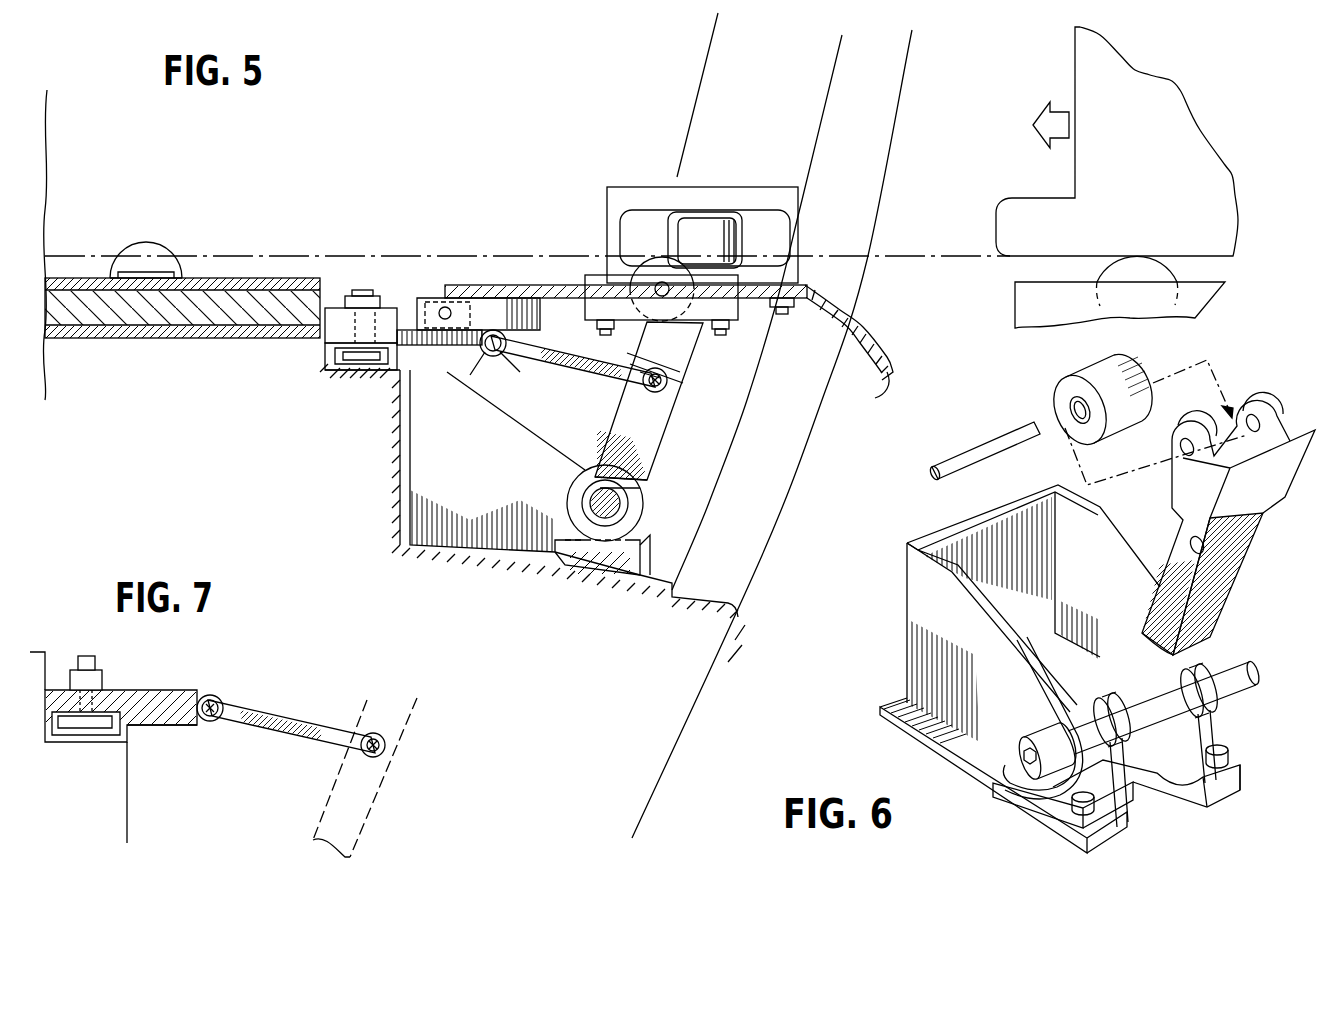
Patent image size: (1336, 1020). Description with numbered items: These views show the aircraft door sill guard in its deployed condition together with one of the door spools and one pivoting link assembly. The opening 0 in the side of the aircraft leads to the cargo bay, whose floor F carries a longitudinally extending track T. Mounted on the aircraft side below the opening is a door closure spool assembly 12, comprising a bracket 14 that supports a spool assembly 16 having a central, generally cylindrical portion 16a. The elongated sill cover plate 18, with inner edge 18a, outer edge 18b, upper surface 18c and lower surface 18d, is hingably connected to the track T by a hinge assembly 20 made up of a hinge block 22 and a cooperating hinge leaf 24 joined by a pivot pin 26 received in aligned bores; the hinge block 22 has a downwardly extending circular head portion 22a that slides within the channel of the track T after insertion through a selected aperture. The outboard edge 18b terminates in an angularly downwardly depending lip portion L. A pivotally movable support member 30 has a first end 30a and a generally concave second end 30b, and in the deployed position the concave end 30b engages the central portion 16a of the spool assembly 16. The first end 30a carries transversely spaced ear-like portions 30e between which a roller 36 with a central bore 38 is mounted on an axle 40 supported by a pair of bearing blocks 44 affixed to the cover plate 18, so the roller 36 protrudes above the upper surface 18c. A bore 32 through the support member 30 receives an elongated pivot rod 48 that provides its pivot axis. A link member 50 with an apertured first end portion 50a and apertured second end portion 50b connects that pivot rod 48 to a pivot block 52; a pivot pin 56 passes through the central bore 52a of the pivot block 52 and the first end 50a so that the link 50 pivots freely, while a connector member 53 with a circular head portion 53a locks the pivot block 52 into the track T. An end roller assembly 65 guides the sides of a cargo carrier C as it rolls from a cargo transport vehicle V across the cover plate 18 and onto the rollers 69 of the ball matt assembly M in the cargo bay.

In FIG. 5, the opening 0 is at (668, 572).
In FIG. 5, the door closure spool assembly 12 is at (658, 514).
In FIG. 6, the door closure spool assembly 12 is at (1270, 661).
In FIG. 5, the bracket 14 is at (473, 461).
In FIG. 6, the bracket 14 is at (895, 641).
In FIG. 5, the spool assembly 16 is at (562, 484).
In FIG. 6, the spool assembly 16 is at (1265, 722).
In FIG. 5, the central cylindrically shaped portion 16a is at (590, 503).
In FIG. 6, the central cylindrically shaped portion 16a is at (1130, 705).
In FIG. 5, the sill cover plate 18 is at (543, 271).
In FIG. 5, the inner edge 18a is at (455, 290).
In FIG. 5, the outer edge 18b is at (886, 385).
In FIG. 5, the upper surface 18c is at (512, 292).
In FIG. 5, the lower surface 18d is at (772, 300).
In FIG. 5, the hinge assembly 20 is at (395, 298).
In FIG. 5, the hinge block 22 is at (335, 308).
In FIG. 5, the head portion 22a is at (346, 352).
In FIG. 5, the hinge leaf 24 is at (428, 298).
In FIG. 5, the pivot pin 26 is at (451, 313).
In FIG. 5, the support member 30 is at (665, 423).
In FIG. 6, the support member 30 is at (1253, 592).
In FIG. 7, the support member 30 is at (365, 825).
In FIG. 6, the first end 30a is at (1183, 468).
In FIG. 5, the second end 30b is at (622, 470).
In FIG. 6, the second end 30b is at (1145, 638).
In FIG. 7, the second end 30b is at (315, 850).
In FIG. 5, the ear-like portions 30e is at (652, 278).
In FIG. 6, the ear-like portions 30e is at (1192, 438).
In FIG. 5, the bore 32 is at (637, 377).
In FIG. 6, the bore 32 is at (1190, 540).
In FIG. 5, the roller 36 is at (680, 270).
In FIG. 6, the roller 36 is at (1058, 388).
In FIG. 6, the central bore 38 is at (1075, 410).
In FIG. 5, the axle 40 is at (662, 298).
In FIG. 6, the axle 40 is at (950, 462).
In FIG. 5, the bearing blocks 44 is at (600, 290).
In FIG. 5, the pivot rod 48 is at (652, 392).
In FIG. 7, the pivot rod 48 is at (380, 753).
In FIG. 5, the link member 50 is at (565, 362).
In FIG. 7, the link member 50 is at (283, 744).
In FIG. 5, the first end portion 50a is at (482, 352).
In FIG. 7, the first end portion 50a is at (199, 700).
In FIG. 5, the second end portion 50b is at (668, 383).
In FIG. 7, the second end portion 50b is at (384, 742).
In FIG. 5, the pivot block 52 is at (410, 348).
In FIG. 7, the pivot block 52 is at (138, 688).
In FIG. 5, the central bore 52a is at (488, 358).
In FIG. 7, the central bore 52a is at (222, 710).
In FIG. 7, the connector member 53 is at (75, 700).
In FIG. 7, the head portion 53a is at (80, 725).
In FIG. 5, the pivot pin 56 is at (501, 355).
In FIG. 7, the pivot pin 56 is at (212, 722).
In FIG. 5, the end roller assembly 65 is at (718, 180).
In FIG. 5, the rollers 69 is at (142, 262).
In FIG. 5, the cargo carrier C is at (1232, 170).
In FIG. 5, the floor F is at (332, 350).
In FIG. 7, the floor F is at (120, 732).
In FIG. 5, the lip portion L is at (870, 308).
In FIG. 5, the ball matt assembly M is at (220, 278).
In FIG. 5, the track T is at (372, 372).
In FIG. 7, the track T is at (90, 742).
In FIG. 5, the cargo transport vehicle V is at (1205, 294).